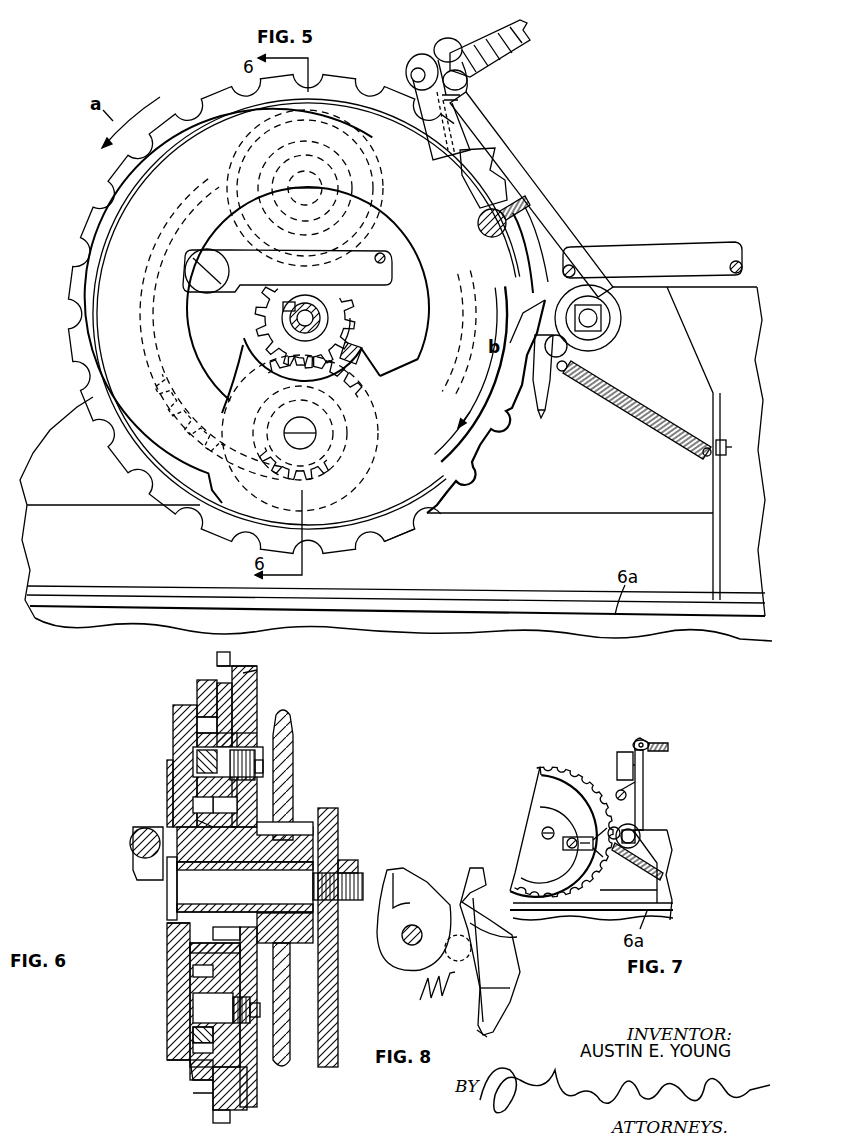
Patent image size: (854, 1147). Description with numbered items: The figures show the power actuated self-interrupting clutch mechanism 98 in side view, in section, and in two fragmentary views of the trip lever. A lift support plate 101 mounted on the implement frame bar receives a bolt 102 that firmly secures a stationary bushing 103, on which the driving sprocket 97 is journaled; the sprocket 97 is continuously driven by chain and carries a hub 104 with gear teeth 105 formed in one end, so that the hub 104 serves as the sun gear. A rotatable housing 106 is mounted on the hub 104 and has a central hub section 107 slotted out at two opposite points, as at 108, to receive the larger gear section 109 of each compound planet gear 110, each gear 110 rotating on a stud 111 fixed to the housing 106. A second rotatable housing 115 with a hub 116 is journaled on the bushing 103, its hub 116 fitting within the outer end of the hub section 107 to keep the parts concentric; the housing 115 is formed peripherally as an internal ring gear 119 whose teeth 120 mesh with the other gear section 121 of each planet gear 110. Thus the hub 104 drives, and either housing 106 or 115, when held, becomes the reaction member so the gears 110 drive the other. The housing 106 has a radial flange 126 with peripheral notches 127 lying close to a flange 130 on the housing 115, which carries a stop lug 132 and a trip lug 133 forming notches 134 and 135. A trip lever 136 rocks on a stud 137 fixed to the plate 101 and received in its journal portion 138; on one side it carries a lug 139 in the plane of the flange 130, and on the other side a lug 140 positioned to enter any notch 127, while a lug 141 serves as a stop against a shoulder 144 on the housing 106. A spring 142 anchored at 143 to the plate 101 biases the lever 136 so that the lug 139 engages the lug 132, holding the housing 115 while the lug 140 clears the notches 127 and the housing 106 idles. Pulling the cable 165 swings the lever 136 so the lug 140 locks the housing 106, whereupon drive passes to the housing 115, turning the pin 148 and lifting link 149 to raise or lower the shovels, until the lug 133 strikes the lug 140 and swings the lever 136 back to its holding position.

In FIG. 6, the driving sprocket 97 is at (288, 745).
In FIG. 5, the self-interrupting clutch mechanism 98 is at (75, 190).
In FIG. 6, the self-interrupting clutch mechanism 98 is at (342, 765).
In FIG. 7, the self-interrupting clutch mechanism 98 is at (535, 815).
In FIG. 5, the lift support plate 101 is at (685, 388).
In FIG. 6, the lift support plate 101 is at (335, 842).
In FIG. 7, the lift support plate 101 is at (645, 855).
In FIG. 5, the bolt 102 is at (275, 309).
In FIG. 6, the bolt 102 is at (170, 900).
In FIG. 5, the stationary bushing 103 is at (290, 318).
In FIG. 6, the stationary bushing 103 is at (290, 876).
In FIG. 5, the hub 104 is at (333, 330).
In FIG. 6, the hub 104 is at (290, 845).
In FIG. 5, the gear teeth 105 is at (347, 335).
In FIG. 6, the gear teeth 105 is at (225, 935).
In FIG. 5, the rotatable housing 106 is at (500, 440).
In FIG. 6, the rotatable housing 106 is at (260, 682).
In FIG. 8, the rotatable housing 106 is at (470, 1025).
In FIG. 7, the rotatable housing 106 is at (548, 763).
In FIG. 5, the central hub section 107 is at (247, 356).
In FIG. 6, the central hub section 107 is at (200, 823).
In FIG. 5, the slot 108 is at (355, 347).
In FIG. 6, the slot 108 is at (200, 806).
In FIG. 5, the larger gear section 109 is at (380, 377).
In FIG. 6, the larger gear section 109 is at (230, 715).
In FIG. 5, the compound planet gear 110 is at (230, 207).
In FIG. 6, the compound planet gear 110 is at (186, 736).
In FIG. 5, the stud 111 is at (294, 449).
In FIG. 6, the stud 111 is at (197, 757).
In FIG. 6, the second rotatable housing 115 is at (165, 988).
In FIG. 7, the second rotatable housing 115 is at (542, 792).
In FIG. 6, the hub 116 is at (200, 952).
In FIG. 5, the internal ring gear 119 is at (148, 452).
In FIG. 6, the internal ring gear 119 is at (198, 1045).
In FIG. 6, the teeth 120 is at (203, 722).
In FIG. 6, the other gear section 121 is at (197, 782).
In FIG. 5, the radial flange 126 is at (388, 530).
In FIG. 6, the radial flange 126 is at (232, 1107).
In FIG. 5, the peripheral notches 127 is at (462, 501).
In FIG. 6, the peripheral notches 127 is at (238, 663).
In FIG. 5, the flange 130 is at (356, 122).
In FIG. 6, the flange 130 is at (205, 1098).
In FIG. 5, the stop lug 132 is at (489, 165).
In FIG. 7, the stop lug 132 is at (568, 785).
In FIG. 5, the trip lug 133 is at (524, 398).
In FIG. 7, the trip lug 133 is at (612, 833).
In FIG. 5, the notch 134 is at (508, 205).
In FIG. 5, the notch 135 is at (492, 372).
In FIG. 5, the trip lever 136 is at (480, 113).
In FIG. 8, the trip lever 136 is at (422, 884).
In FIG. 7, the trip lever 136 is at (645, 775).
In FIG. 5, the stud 137 is at (620, 342).
In FIG. 8, the stud 137 is at (404, 940).
In FIG. 7, the stud 137 is at (633, 830).
In FIG. 5, the journal portion 138 is at (620, 318).
In FIG. 5, the lug 139 is at (522, 206).
In FIG. 7, the lug 139 is at (616, 795).
In FIG. 5, the lug 140 is at (548, 385).
In FIG. 8, the lug 140 is at (470, 962).
In FIG. 7, the lug 140 is at (630, 822).
In FIG. 5, the lug 141 is at (545, 412).
In FIG. 8, the lug 141 is at (513, 987).
In FIG. 5, the spring 142 is at (628, 410).
In FIG. 8, the spring 142 is at (420, 992).
In FIG. 7, the spring 142 is at (660, 868).
In FIG. 5, the anchor 143 is at (728, 455).
In FIG. 6, the shoulder 144 is at (250, 672).
In FIG. 8, the shoulder 144 is at (505, 940).
In FIG. 5, the pin 148 is at (186, 290).
In FIG. 6, the pin 148 is at (140, 873).
In FIG. 7, the pin 148 is at (563, 843).
In FIG. 5, the lifting link 149 is at (367, 257).
In FIG. 6, the lifting link 149 is at (137, 850).
In FIG. 7, the lifting link 149 is at (590, 850).
In FIG. 5, the cable 165 is at (503, 40).
In FIG. 7, the cable 165 is at (662, 745).